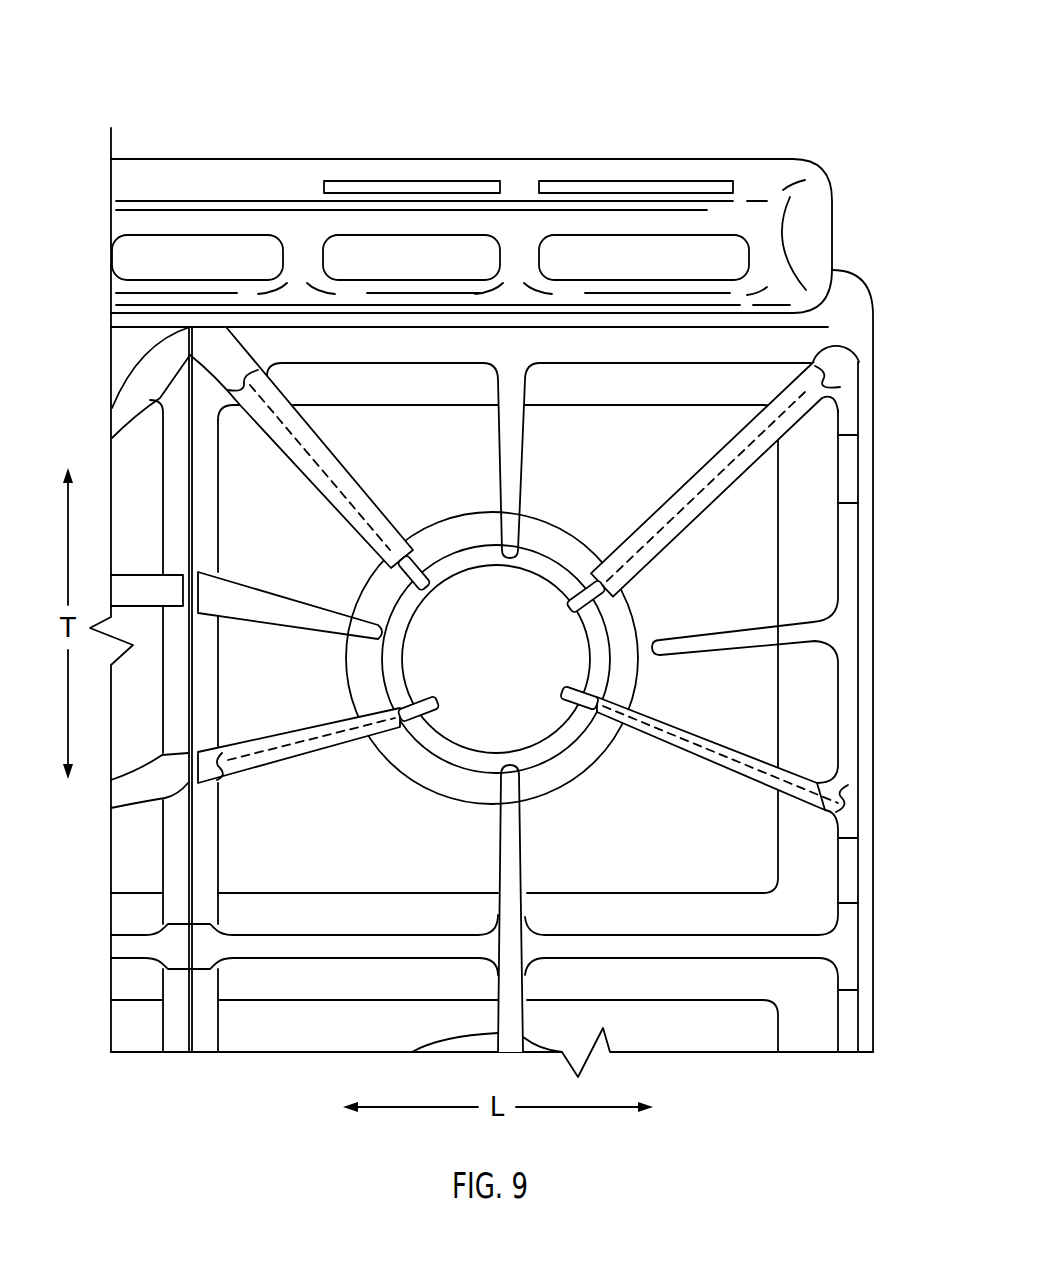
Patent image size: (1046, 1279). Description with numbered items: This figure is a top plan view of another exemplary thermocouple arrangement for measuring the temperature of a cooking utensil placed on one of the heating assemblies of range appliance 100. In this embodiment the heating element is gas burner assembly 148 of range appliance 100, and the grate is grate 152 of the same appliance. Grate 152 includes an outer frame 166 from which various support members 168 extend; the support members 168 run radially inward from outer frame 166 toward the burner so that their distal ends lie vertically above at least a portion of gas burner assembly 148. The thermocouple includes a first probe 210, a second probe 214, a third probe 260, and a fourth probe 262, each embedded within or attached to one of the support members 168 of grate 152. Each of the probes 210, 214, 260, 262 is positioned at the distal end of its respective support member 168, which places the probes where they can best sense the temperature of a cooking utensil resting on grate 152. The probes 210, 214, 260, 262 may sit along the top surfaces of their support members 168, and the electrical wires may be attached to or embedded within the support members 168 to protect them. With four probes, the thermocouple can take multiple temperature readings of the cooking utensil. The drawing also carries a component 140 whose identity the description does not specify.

The range appliance 100 is at (278, 130).
The housing 140 is at (858, 297).
The gas burner assembly 148 is at (520, 722).
The grate 152 is at (860, 714).
The outer frame 166 is at (848, 532).
The support members 168 is at (342, 500).
The first probe 210 is at (580, 572).
The second probe 214 is at (437, 770).
The third probe 260 is at (405, 545).
The fourth probe 262 is at (600, 692).